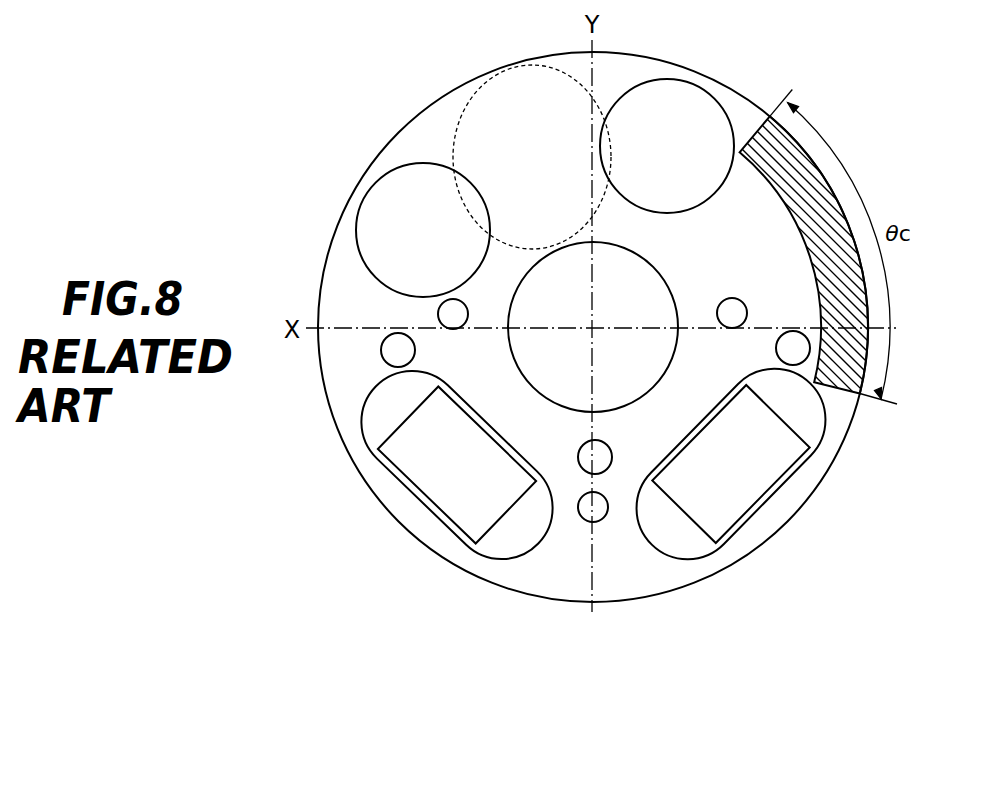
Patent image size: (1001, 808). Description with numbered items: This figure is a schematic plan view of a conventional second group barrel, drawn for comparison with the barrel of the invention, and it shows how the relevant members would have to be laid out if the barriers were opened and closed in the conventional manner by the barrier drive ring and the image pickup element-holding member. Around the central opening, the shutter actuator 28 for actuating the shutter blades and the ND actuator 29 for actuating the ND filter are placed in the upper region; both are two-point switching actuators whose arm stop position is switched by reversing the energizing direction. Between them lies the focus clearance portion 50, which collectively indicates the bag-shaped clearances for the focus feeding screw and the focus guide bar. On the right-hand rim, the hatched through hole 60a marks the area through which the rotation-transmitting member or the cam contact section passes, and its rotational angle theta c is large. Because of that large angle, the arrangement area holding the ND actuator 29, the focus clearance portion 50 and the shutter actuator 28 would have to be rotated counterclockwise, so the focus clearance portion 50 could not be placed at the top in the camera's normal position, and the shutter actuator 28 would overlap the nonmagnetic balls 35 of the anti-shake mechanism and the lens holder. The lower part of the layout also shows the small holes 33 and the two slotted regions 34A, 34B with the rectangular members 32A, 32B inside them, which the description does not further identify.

The shutter actuator 28 is at (378, 180).
The ND actuator 29 is at (683, 84).
The focus clearance portion 50 is at (528, 72).
The through hole 60a is at (782, 138).
The nonmagnetic balls 35 is at (438, 313).
The screw holes 33 is at (381, 352).
The first slot 34A is at (373, 430).
The first magnet 32A is at (395, 478).
The second slot 34B is at (680, 547).
The second magnet 32B is at (742, 508).